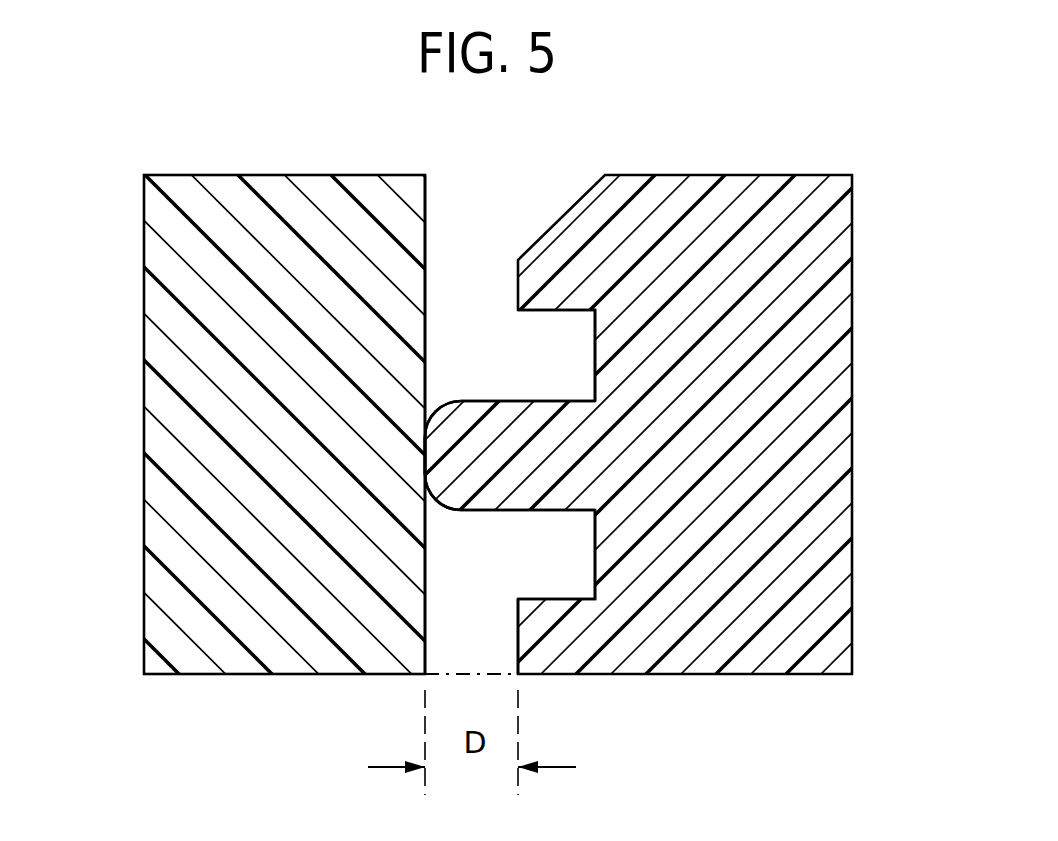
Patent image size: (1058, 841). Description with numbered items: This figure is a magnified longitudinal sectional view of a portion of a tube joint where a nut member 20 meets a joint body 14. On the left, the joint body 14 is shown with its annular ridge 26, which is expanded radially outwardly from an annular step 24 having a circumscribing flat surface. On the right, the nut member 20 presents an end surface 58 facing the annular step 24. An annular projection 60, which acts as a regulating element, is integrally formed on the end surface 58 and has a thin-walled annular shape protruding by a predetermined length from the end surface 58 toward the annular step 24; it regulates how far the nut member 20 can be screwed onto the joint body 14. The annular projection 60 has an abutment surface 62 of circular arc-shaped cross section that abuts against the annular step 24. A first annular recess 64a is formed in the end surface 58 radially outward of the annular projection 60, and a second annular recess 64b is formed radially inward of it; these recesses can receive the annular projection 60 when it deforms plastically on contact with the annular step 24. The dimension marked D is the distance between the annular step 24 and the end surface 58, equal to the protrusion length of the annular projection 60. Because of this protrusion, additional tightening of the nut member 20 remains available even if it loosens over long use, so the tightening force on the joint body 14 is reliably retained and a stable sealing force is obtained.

The joint body 14 is at (138, 574).
The nut member 20 is at (860, 421).
The annular step 24 is at (426, 248).
The annular ridge 26 is at (303, 214).
The end surface 58 is at (518, 637).
The annular projection 60 is at (456, 471).
The abutment surface 62 is at (425, 455).
The first annular recess 64a is at (568, 345).
The second annular recess 64b is at (568, 566).